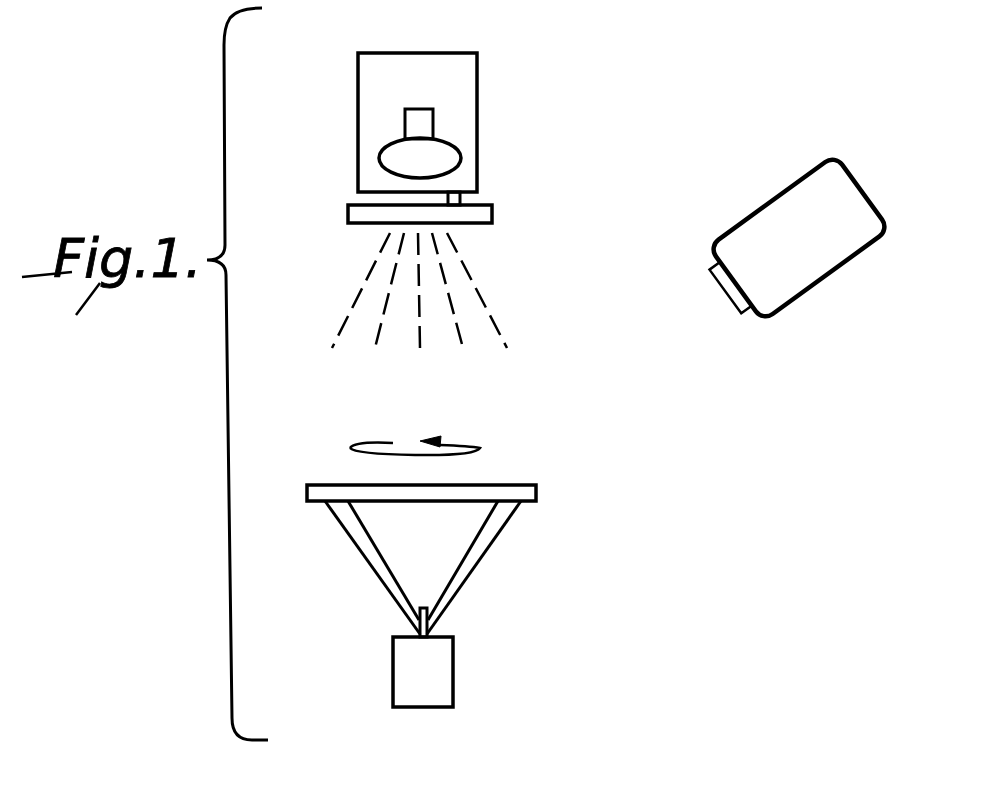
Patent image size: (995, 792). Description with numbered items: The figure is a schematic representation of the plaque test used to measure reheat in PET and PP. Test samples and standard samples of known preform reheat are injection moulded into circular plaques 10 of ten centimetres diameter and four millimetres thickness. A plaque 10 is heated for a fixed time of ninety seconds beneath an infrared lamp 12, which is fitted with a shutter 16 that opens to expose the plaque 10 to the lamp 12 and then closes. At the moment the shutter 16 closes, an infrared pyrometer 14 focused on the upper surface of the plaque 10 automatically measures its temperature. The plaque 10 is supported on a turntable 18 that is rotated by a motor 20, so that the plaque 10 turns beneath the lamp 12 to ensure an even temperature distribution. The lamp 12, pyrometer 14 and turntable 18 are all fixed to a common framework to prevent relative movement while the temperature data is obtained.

The circular plaque 10 is at (320, 494).
The infrared lamp 12 is at (393, 157).
The infrared pyrometer 14 is at (797, 272).
The shutter 16 is at (370, 213).
The turntable 18 is at (390, 583).
The motor 20 is at (410, 658).